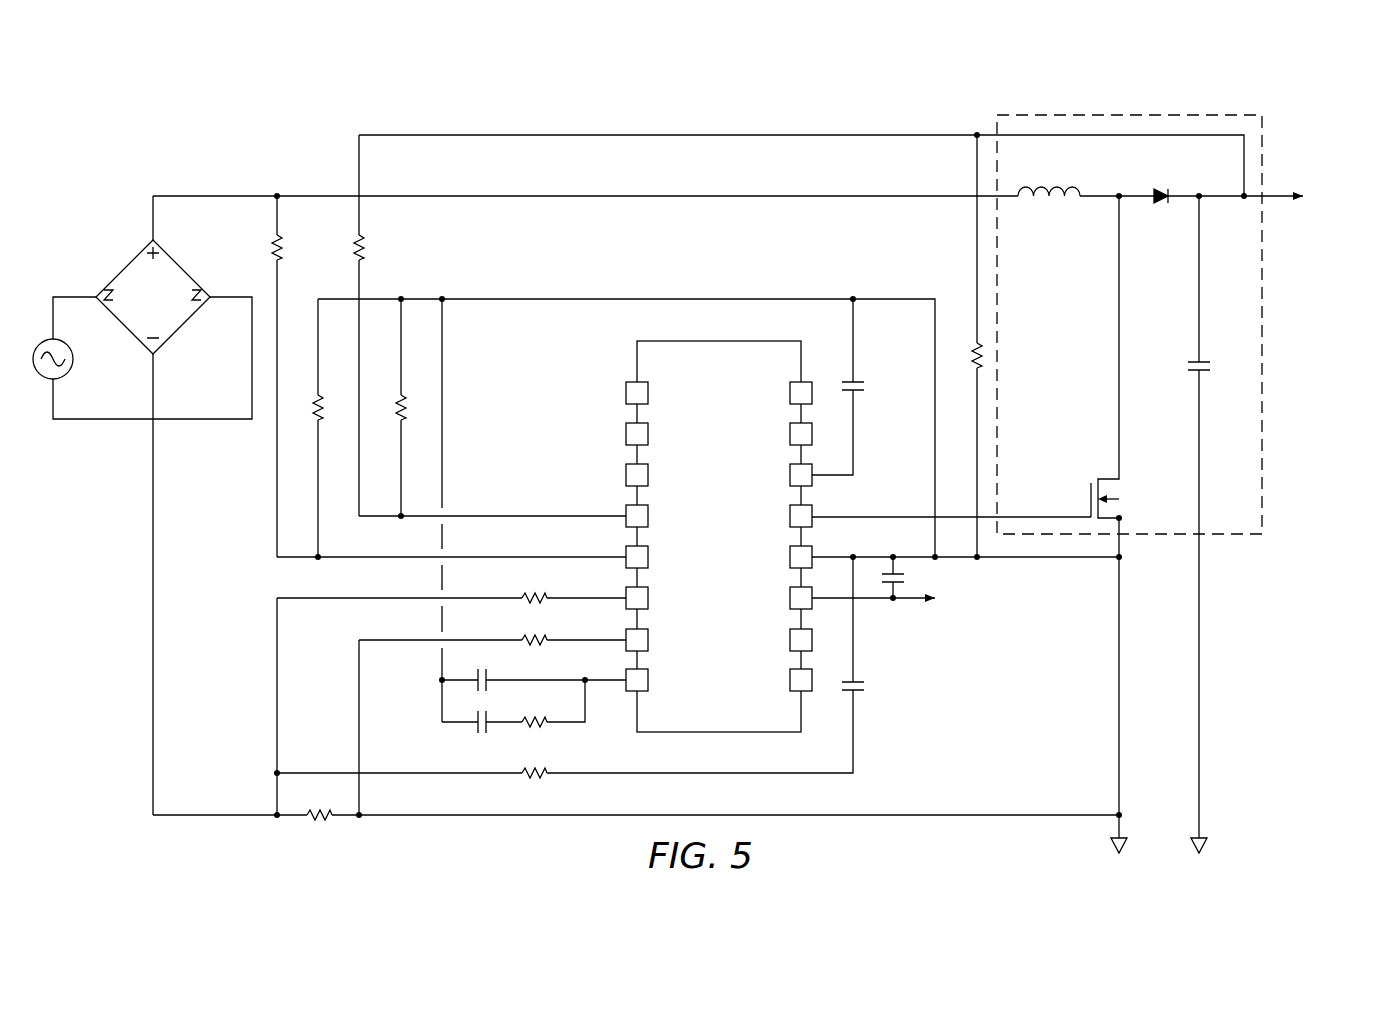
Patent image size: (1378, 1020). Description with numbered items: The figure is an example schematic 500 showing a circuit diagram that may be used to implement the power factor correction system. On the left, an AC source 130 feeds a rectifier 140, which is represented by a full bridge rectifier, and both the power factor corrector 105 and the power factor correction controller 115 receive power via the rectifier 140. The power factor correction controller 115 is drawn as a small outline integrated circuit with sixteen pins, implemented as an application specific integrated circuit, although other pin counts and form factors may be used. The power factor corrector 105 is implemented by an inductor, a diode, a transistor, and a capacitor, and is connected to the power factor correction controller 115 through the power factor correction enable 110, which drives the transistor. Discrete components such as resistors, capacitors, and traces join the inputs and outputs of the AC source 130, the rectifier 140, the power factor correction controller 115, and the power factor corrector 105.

The schematic 500 is at (194, 113).
The rectifier 140 is at (125, 266).
The AC source 130 is at (73, 362).
The power factor correction controller 115 is at (637, 362).
The power factor correction enable 110 is at (815, 510).
The power factor corrector 105 is at (1197, 115).